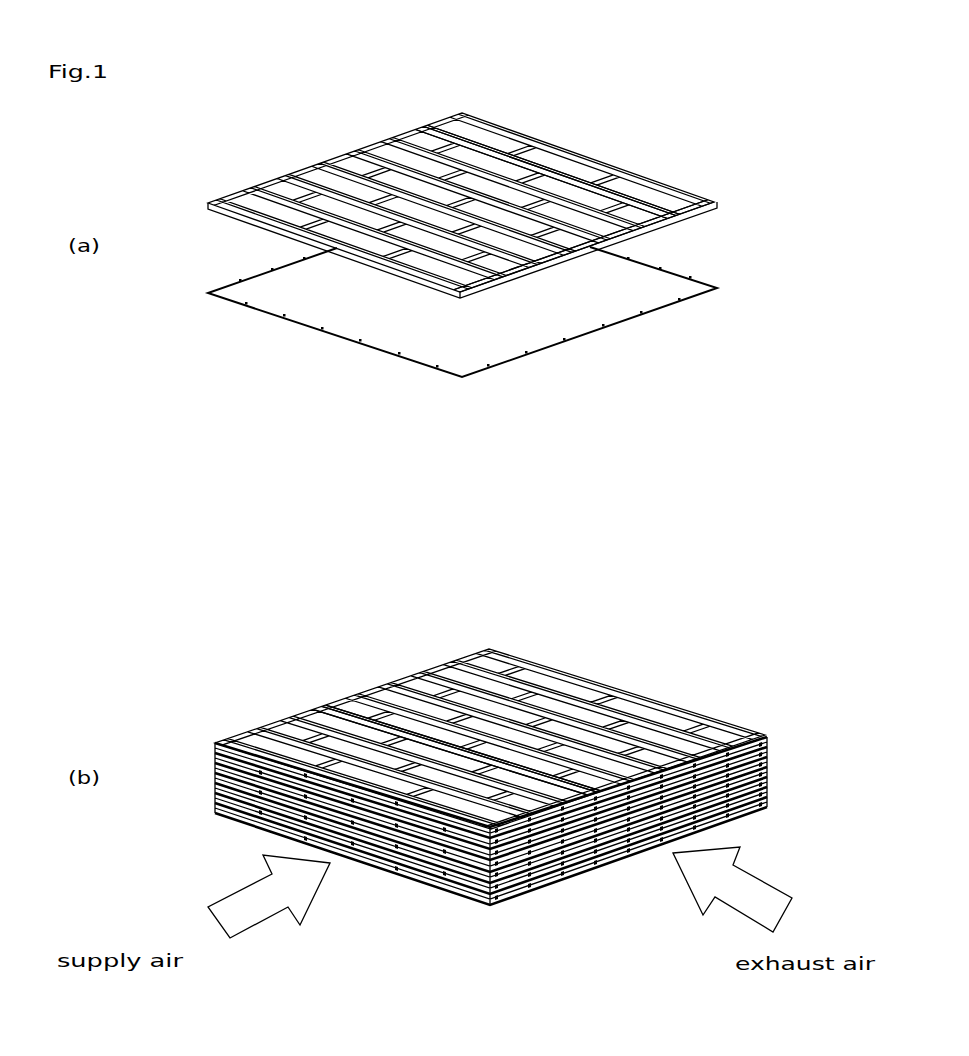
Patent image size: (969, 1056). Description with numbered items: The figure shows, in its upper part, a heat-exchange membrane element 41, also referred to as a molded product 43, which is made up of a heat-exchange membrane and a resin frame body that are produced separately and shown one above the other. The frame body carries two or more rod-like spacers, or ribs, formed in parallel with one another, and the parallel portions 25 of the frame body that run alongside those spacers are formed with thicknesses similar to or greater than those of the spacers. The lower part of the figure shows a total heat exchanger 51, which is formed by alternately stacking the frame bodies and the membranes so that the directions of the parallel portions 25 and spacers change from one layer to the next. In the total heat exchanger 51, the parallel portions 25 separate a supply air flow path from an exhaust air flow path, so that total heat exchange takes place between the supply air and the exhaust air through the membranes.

The parallel portions 25 is at (655, 212).
The heat-exchange membrane element 41 is at (484, 217).
The molded product 43 is at (513, 217).
The total heat exchanger 51 is at (498, 747).